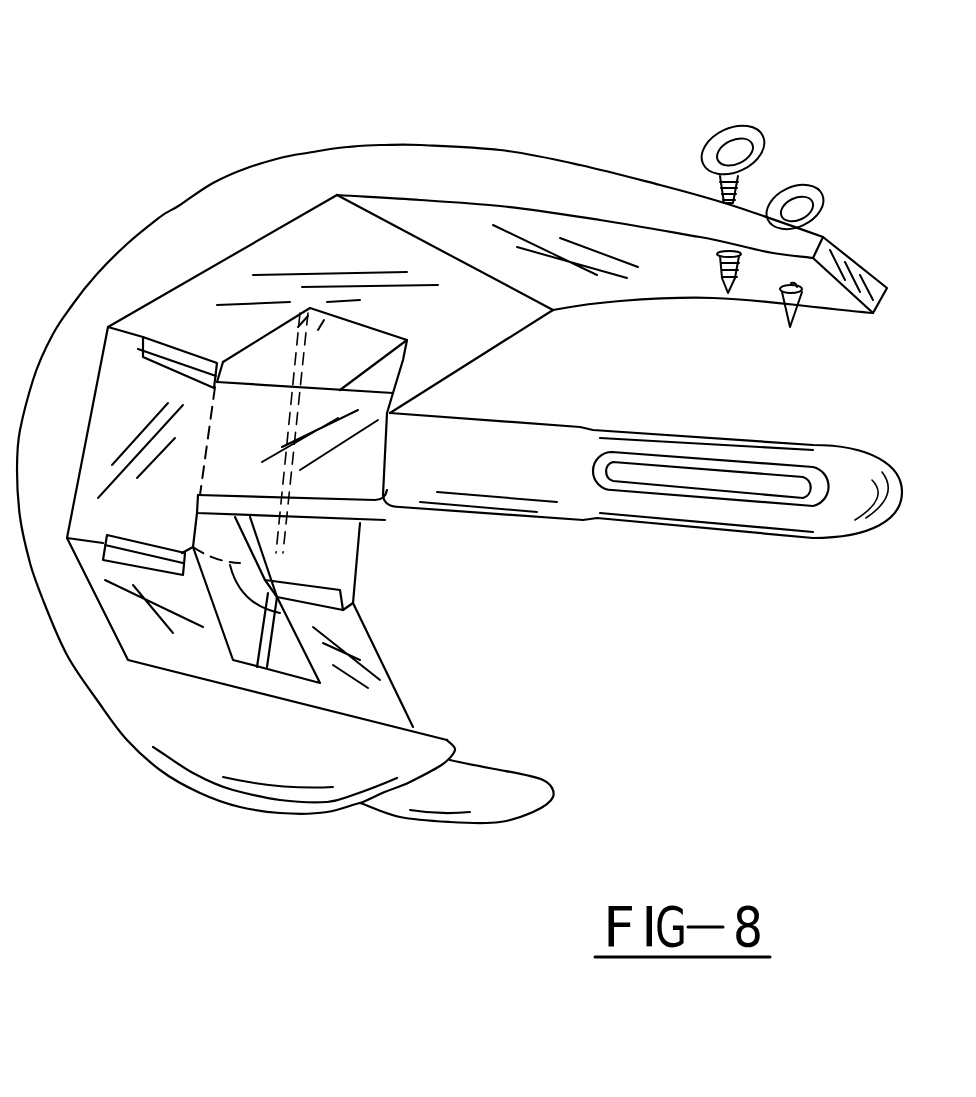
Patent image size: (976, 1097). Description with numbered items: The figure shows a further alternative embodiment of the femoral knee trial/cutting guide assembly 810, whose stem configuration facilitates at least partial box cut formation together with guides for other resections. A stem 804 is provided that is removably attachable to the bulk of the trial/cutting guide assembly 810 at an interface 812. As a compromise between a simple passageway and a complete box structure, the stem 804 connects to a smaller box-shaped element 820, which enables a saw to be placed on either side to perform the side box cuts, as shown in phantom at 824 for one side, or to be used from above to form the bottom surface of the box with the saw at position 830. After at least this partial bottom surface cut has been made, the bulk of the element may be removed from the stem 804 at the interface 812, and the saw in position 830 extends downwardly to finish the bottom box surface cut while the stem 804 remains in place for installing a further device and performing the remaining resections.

The trial/cutting guide assembly 810 is at (277, 123).
The saw shown in phantom 824 is at (369, 637).
The saw position 830 is at (405, 375).
The box-shaped element 820 is at (327, 512).
The interface 812 is at (405, 517).
The stem 804 is at (565, 507).